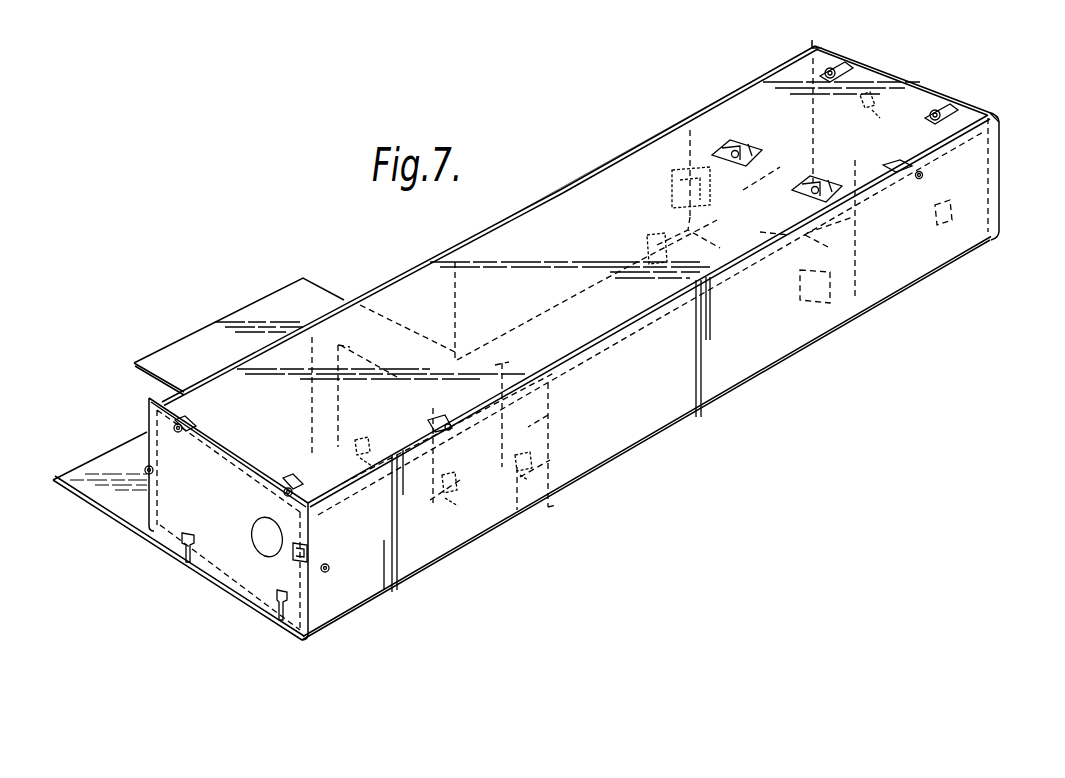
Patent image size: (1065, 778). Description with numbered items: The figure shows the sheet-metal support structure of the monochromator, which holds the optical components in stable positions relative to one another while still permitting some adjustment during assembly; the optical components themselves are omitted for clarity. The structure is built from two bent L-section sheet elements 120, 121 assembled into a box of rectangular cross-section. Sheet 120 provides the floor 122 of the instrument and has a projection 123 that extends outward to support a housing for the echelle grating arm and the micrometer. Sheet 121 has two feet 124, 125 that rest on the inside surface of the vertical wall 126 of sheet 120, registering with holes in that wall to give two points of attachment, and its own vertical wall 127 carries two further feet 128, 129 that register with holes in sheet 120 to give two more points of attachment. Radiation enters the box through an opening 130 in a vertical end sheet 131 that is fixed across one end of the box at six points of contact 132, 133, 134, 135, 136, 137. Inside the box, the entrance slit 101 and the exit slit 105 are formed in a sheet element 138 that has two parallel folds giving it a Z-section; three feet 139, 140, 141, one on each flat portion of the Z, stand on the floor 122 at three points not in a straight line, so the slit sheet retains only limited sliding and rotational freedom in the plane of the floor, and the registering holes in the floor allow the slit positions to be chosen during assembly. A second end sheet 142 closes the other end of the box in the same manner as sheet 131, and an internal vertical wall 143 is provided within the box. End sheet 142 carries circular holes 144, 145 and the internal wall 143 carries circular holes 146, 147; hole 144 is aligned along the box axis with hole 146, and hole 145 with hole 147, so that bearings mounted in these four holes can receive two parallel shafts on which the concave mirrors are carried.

The entrance slit 101 is at (548, 412).
The exit slit 105 is at (362, 413).
The bent L-section sheet element 120 is at (320, 293).
The bent L-section sheet element 121 is at (637, 160).
The floor 122 is at (633, 408).
The projection 123 is at (163, 363).
The foot 124 is at (458, 432).
The foot 125 is at (902, 162).
The vertical wall 126 is at (1002, 160).
The vertical wall 127 is at (463, 313).
The foot 128 is at (640, 253).
The foot 129 is at (148, 524).
The opening 130 is at (263, 545).
The vertical end sheet 131 is at (168, 532).
The point of contact 132 is at (277, 633).
The point of contact 133 is at (182, 575).
The point of contact 134 is at (147, 466).
The point of contact 135 is at (200, 417).
The point of contact 136 is at (300, 473).
The point of contact 137 is at (329, 565).
The sheet element 138 is at (540, 447).
The foot 139 is at (514, 512).
The foot 140 is at (443, 515).
The foot 141 is at (380, 452).
The second end sheet 142 is at (907, 80).
The internal vertical wall 143 is at (884, 306).
The circular hole 144 is at (883, 140).
The circular hole 145 is at (1002, 128).
The circular hole 146 is at (777, 171).
The circular hole 147 is at (830, 230).